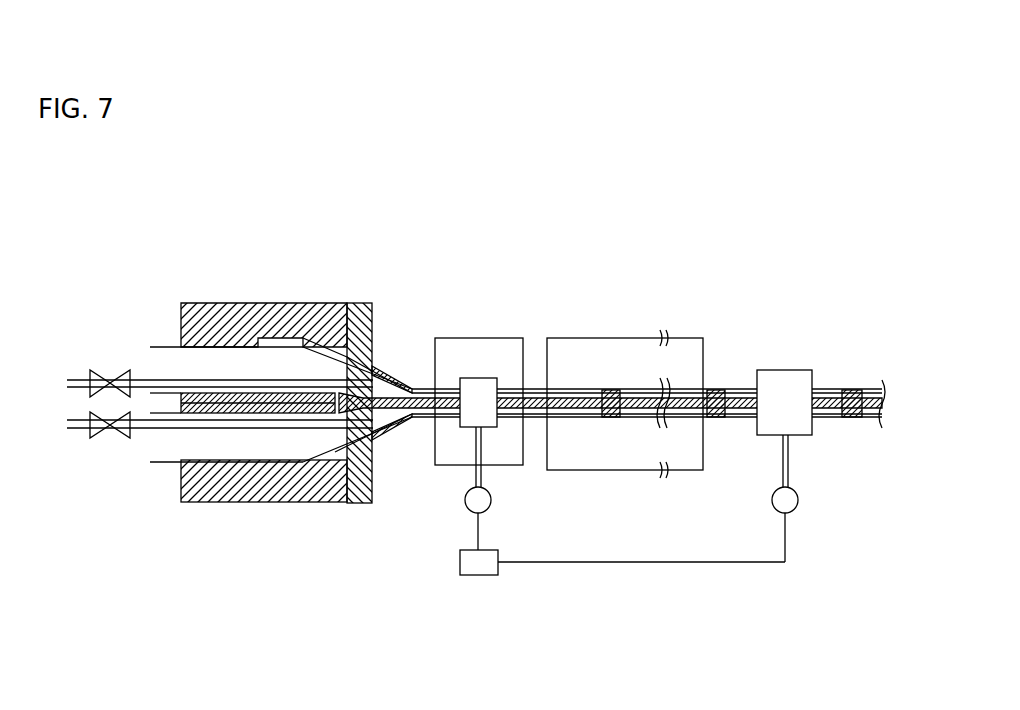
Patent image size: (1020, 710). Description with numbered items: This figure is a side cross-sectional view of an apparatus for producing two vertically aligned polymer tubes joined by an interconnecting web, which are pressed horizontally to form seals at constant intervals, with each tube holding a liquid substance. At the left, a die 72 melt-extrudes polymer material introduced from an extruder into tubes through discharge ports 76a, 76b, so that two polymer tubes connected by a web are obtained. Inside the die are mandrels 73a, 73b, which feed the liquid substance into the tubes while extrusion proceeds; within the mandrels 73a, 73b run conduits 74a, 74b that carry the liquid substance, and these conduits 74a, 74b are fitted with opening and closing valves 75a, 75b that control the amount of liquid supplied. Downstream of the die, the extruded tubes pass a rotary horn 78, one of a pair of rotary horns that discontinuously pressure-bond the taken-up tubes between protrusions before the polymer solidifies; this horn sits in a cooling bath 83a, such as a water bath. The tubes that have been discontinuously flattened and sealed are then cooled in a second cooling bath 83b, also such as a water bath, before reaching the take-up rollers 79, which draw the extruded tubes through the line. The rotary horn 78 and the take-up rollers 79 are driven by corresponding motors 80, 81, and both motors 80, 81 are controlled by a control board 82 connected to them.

The die 72 is at (361, 316).
The mandrel 73a is at (193, 328).
The mandrel 73b is at (225, 463).
The conduit 74a is at (142, 378).
The conduit 74b is at (143, 432).
The opening and closing valve 75a is at (104, 371).
The opening and closing valve 75b is at (103, 439).
The discharge port 76a is at (373, 366).
The discharge port 76b is at (378, 433).
The rotary horn 78 is at (492, 428).
The take-up rollers 79 is at (797, 370).
The motor 80 is at (465, 506).
The motor 81 is at (799, 499).
The control board 82 is at (460, 564).
The cooling bath 83a is at (502, 347).
The cooling bath 83b is at (687, 348).